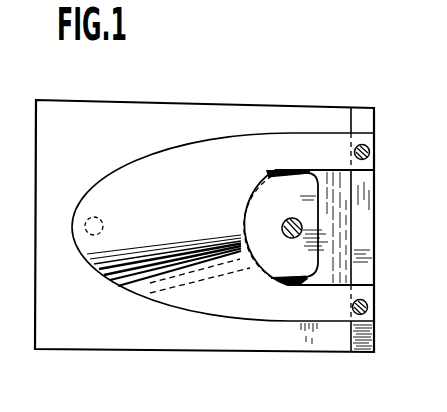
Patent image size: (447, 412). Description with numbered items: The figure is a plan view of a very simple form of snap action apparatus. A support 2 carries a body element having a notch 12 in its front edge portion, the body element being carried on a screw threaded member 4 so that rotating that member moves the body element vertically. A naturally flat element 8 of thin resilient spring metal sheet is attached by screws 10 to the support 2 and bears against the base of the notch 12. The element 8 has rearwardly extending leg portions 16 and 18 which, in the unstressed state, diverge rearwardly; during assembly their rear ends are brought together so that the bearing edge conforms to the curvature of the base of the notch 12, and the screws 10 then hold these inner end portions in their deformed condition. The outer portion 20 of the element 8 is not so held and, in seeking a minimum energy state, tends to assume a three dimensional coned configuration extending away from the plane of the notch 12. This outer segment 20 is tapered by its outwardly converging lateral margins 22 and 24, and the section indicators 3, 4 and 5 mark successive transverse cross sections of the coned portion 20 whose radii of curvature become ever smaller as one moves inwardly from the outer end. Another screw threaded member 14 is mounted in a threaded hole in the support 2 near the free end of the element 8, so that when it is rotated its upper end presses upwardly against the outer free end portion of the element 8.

The resilient element 8 is at (280, 139).
The screws 10 is at (369, 151).
The notch 12 is at (247, 199).
The screw threaded member 14 is at (90, 217).
The leg portion 16 is at (322, 142).
The leg portion 18 is at (312, 302).
The outer portion 20 is at (152, 172).
The lateral margin 22 is at (198, 142).
The lateral margin 24 is at (118, 285).
The support 2 is at (50, 222).
The section line 3- 3 is at (100, 120).
The screw threaded member 4 is at (160, 121).
The section line 5- 5 is at (214, 121).